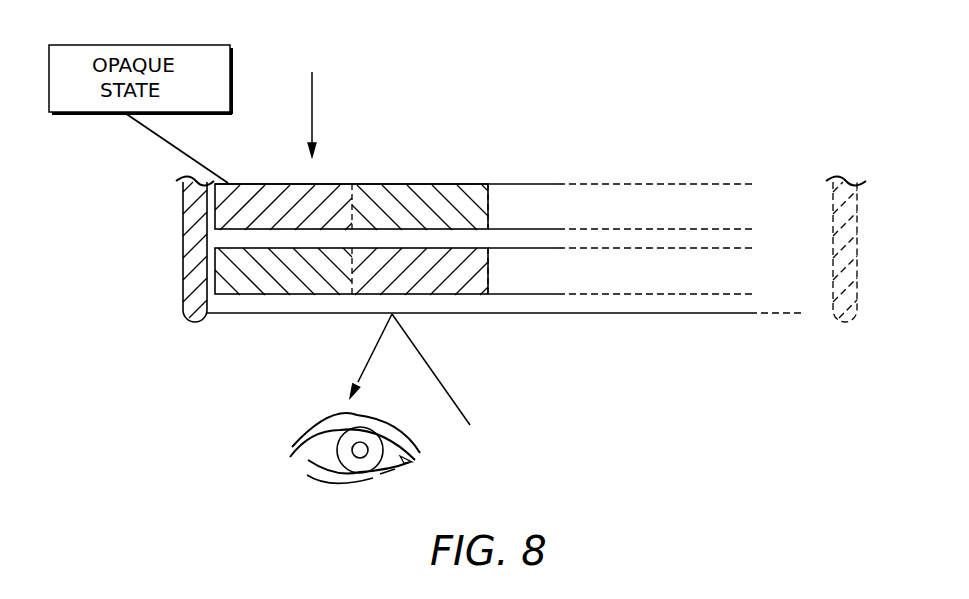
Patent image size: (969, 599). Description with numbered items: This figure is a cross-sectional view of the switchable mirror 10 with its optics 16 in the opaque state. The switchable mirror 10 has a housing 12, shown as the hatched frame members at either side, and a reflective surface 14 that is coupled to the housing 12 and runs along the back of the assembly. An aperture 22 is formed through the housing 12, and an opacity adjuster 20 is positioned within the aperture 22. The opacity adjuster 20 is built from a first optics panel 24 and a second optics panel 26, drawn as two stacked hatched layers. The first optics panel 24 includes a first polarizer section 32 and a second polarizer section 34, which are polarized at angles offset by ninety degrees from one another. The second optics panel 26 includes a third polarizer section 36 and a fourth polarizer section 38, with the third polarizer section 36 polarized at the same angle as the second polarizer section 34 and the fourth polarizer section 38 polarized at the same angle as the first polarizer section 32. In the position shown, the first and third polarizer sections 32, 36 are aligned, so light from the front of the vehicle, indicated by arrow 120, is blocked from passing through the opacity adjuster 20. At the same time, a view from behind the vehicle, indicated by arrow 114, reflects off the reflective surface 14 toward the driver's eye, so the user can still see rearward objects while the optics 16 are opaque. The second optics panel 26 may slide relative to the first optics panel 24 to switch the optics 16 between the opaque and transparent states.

The switchable mirror 10 is at (768, 112).
The housing 12 is at (160, 318).
The reflective surface 14 is at (637, 314).
The optics 16 is at (602, 68).
The opacity adjuster 20 is at (516, 166).
The aperture 22 is at (491, 102).
The first optics panel 24 is at (295, 190).
The second optics panel 26 is at (323, 308).
The first polarizer section 32 is at (258, 203).
The second polarizer section 34 is at (408, 188).
The third polarizer section 36 is at (256, 290).
The fourth polarizer section 38 is at (455, 292).
The arrow 114 is at (458, 405).
The arrow 120 is at (312, 98).